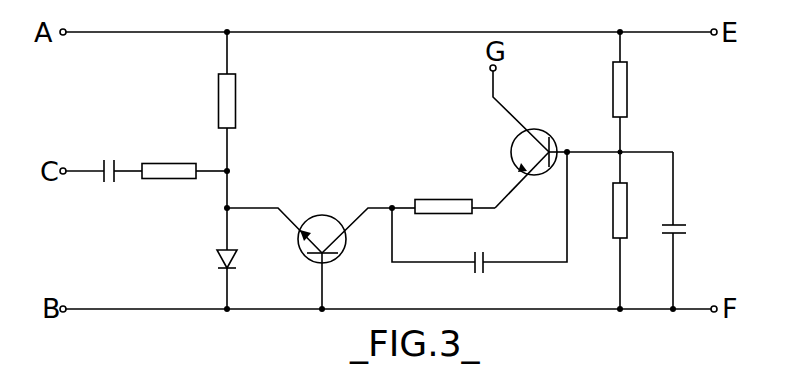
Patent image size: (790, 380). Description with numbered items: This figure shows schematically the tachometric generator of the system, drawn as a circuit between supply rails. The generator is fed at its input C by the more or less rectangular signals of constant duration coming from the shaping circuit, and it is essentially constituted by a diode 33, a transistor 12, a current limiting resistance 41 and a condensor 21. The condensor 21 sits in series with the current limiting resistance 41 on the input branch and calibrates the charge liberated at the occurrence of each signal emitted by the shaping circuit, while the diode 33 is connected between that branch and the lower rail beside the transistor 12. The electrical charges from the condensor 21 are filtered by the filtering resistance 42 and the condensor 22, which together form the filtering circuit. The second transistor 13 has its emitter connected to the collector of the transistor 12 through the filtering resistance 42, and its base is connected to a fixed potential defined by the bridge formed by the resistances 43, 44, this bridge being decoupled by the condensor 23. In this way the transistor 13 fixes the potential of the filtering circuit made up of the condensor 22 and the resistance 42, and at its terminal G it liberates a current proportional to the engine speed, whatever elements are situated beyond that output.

The transistor 12 is at (317, 228).
The transistor 13 is at (540, 133).
The condensor 21 is at (109, 157).
The condensor 22 is at (472, 268).
The condensor 23 is at (690, 228).
The diode 33 is at (218, 254).
The current limiting resistance 41 is at (163, 165).
The filtering resistance 42 is at (430, 200).
The bridge resistance 43 is at (620, 97).
The bridge resistance 44 is at (620, 218).